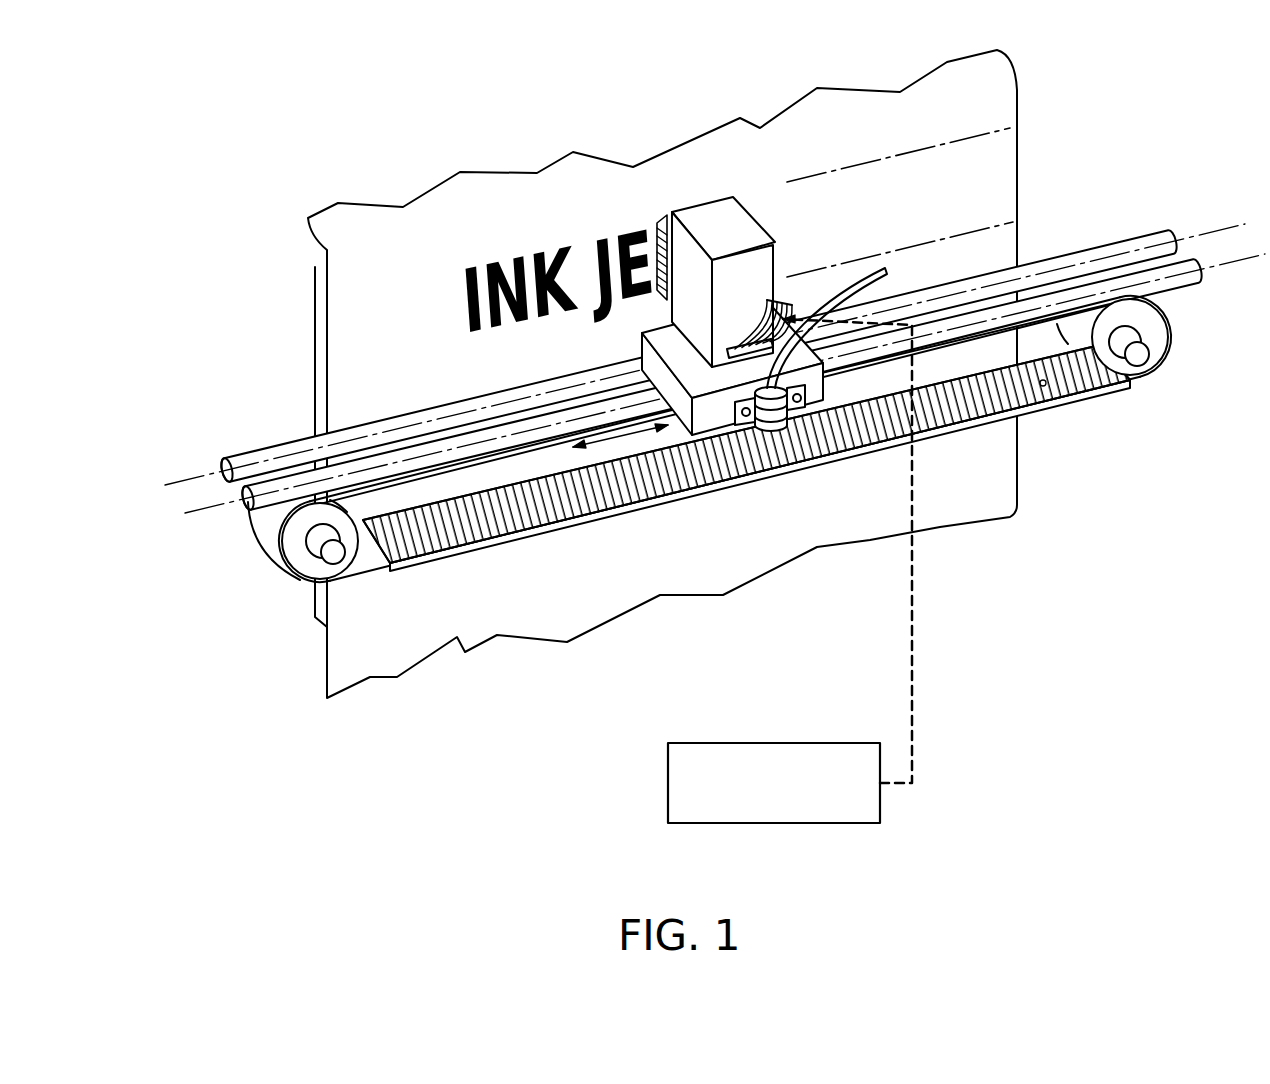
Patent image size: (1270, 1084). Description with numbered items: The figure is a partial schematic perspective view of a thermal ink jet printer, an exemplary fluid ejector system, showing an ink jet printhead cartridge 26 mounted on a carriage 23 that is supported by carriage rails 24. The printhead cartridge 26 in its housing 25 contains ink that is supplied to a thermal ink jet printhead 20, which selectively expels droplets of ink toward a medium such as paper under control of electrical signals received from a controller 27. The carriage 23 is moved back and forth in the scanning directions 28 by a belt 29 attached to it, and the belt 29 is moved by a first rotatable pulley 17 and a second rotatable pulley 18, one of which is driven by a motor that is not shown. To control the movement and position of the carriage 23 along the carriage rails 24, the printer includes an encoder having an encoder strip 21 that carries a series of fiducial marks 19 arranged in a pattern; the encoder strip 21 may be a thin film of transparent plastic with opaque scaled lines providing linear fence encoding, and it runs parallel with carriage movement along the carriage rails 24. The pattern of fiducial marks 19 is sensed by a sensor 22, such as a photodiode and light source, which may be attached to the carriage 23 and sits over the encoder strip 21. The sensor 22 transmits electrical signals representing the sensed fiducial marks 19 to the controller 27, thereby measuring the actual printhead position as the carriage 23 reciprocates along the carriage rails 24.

The first rotatable pulley 17 is at (1158, 340).
The second rotatable pulley 18 is at (298, 563).
The fiducial marks 19 is at (1050, 392).
The thermal ink jet printhead 20 is at (662, 222).
The encoder strip 21 is at (1080, 403).
The sensor 22 is at (768, 415).
The carriage 23 is at (658, 335).
The carriage rails 24 is at (327, 470).
The housing 25 is at (712, 212).
The ink jet printhead cartridge 26 is at (757, 215).
The controller 27 is at (668, 778).
The scanning directions 28 is at (628, 438).
The belt 29 is at (265, 530).